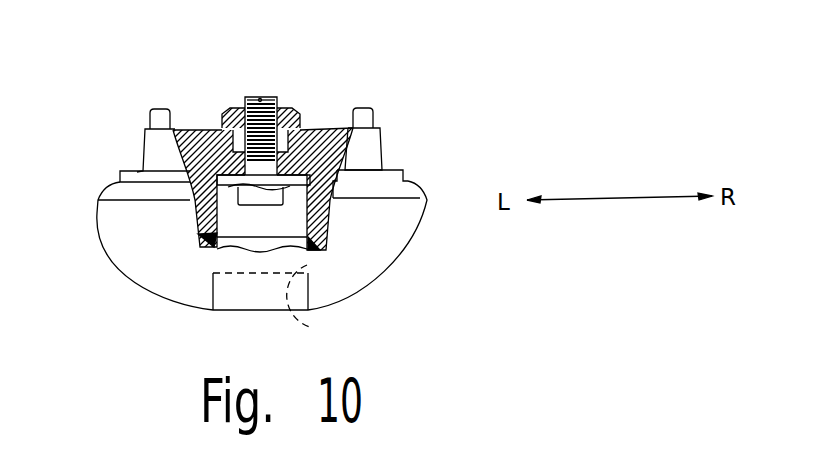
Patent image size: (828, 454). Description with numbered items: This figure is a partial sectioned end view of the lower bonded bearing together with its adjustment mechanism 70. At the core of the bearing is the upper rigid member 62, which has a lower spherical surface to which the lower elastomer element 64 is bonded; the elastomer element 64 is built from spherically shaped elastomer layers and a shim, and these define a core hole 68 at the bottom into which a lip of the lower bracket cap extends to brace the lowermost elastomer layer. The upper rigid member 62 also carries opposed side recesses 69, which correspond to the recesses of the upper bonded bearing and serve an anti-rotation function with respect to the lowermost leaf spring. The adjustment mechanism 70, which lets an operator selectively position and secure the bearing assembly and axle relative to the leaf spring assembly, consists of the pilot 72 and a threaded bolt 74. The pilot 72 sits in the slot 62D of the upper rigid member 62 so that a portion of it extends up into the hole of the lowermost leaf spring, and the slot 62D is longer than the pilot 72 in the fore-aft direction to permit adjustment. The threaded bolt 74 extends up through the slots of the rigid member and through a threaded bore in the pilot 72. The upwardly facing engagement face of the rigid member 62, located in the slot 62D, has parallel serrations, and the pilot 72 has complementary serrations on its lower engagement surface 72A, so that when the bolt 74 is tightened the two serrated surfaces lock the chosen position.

The upper rigid member 62 is at (368, 148).
The slot 62D is at (233, 150).
The lower elastomer element 64 is at (398, 253).
The core hole 68 is at (312, 327).
The side recesses 69 is at (160, 118).
The adjustment mechanism 70 is at (218, 93).
The pilot 72 is at (298, 115).
The lower engagement surface 72A is at (286, 152).
The threaded bolt 74 is at (253, 195).